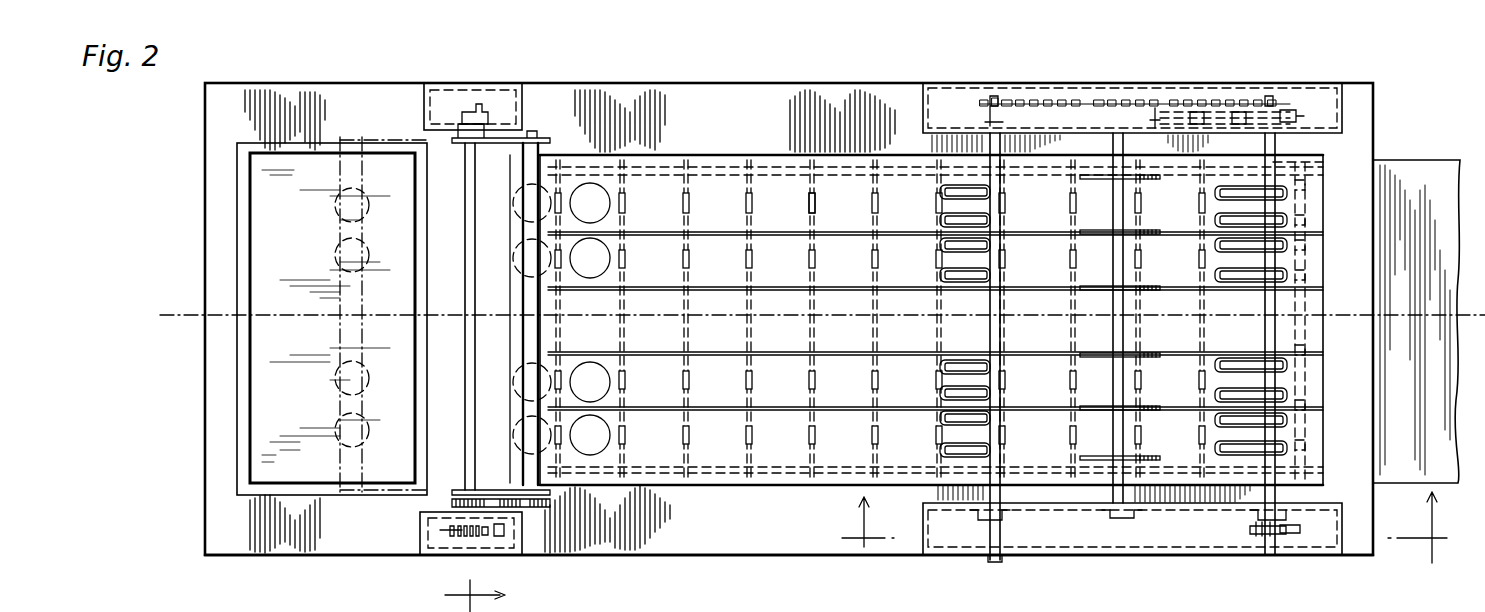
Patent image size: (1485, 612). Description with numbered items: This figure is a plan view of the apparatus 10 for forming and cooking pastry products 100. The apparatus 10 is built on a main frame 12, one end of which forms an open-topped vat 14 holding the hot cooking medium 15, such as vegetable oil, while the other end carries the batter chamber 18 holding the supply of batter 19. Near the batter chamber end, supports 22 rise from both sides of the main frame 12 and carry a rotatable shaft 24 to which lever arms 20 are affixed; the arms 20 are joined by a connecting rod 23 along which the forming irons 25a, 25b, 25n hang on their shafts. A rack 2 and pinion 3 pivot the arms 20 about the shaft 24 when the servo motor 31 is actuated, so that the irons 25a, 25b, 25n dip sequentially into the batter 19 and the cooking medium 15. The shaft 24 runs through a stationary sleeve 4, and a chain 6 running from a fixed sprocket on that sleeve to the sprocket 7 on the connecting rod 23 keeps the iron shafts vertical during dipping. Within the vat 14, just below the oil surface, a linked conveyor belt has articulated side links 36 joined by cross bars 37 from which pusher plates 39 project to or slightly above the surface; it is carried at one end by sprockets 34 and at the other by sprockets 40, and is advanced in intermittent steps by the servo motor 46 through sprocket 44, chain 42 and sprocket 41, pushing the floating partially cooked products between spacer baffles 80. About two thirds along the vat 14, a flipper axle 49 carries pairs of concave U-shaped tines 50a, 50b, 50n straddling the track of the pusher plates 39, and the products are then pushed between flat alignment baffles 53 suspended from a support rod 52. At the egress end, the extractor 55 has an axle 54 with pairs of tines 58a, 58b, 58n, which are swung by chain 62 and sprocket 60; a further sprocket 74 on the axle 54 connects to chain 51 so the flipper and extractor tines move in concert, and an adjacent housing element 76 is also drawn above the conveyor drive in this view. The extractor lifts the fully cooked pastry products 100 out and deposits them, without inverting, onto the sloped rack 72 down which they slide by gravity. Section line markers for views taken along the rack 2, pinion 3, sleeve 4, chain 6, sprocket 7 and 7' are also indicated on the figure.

The rack 2 is at (500, 548).
The pinion 3 is at (422, 536).
The sleeve 4 is at (483, 596).
The chain 6 is at (486, 500).
The sprocket 7 is at (624, 520).
The section line 7' is at (1422, 526).
The apparatus 10 is at (807, 73).
The main frame 12 is at (815, 535).
The vat 14 is at (712, 158).
The cooking medium 15 is at (839, 431).
The batter chamber 18 is at (252, 398).
The batter 19 is at (332, 318).
The lever arms 20 is at (536, 138).
The supports 22 is at (425, 102).
The connecting rod 23 is at (530, 296).
The rotatable shaft 24 is at (470, 372).
The forming iron 25a is at (340, 204).
The forming iron 25b is at (338, 258).
The forming iron 25n is at (340, 444).
The servo motor 31 is at (420, 524).
The sprockets 34 is at (500, 172).
The side links 36 is at (797, 153).
The cross bars 37 is at (812, 338).
The pusher plates 39 is at (815, 202).
The sprockets 40 is at (1300, 165).
The sprocket 41 is at (1322, 92).
The chain 42 is at (1240, 102).
The sprocket 44 is at (1195, 102).
The servo motor 46 is at (1156, 100).
The axle 49 is at (995, 343).
The tines 50a is at (945, 220).
The tines 50b is at (945, 276).
The tines 50n is at (945, 452).
The chain 51 is at (1080, 88).
The support rod 52 is at (1118, 250).
The alignment baffles 53 is at (1155, 180).
The axle 54 is at (1265, 300).
The extractor 55 is at (1228, 350).
The tines 58a is at (1287, 220).
The tines 58b is at (1287, 276).
The tines 58n is at (1287, 450).
The sprocket 60 is at (1258, 530).
The chain 62 is at (1300, 530).
The rack 72 is at (1425, 178).
The sprocket 74 is at (1290, 102).
The control housing 76 is at (978, 94).
The spacer baffles 80 is at (735, 236).
The pastry products 100 is at (600, 245).